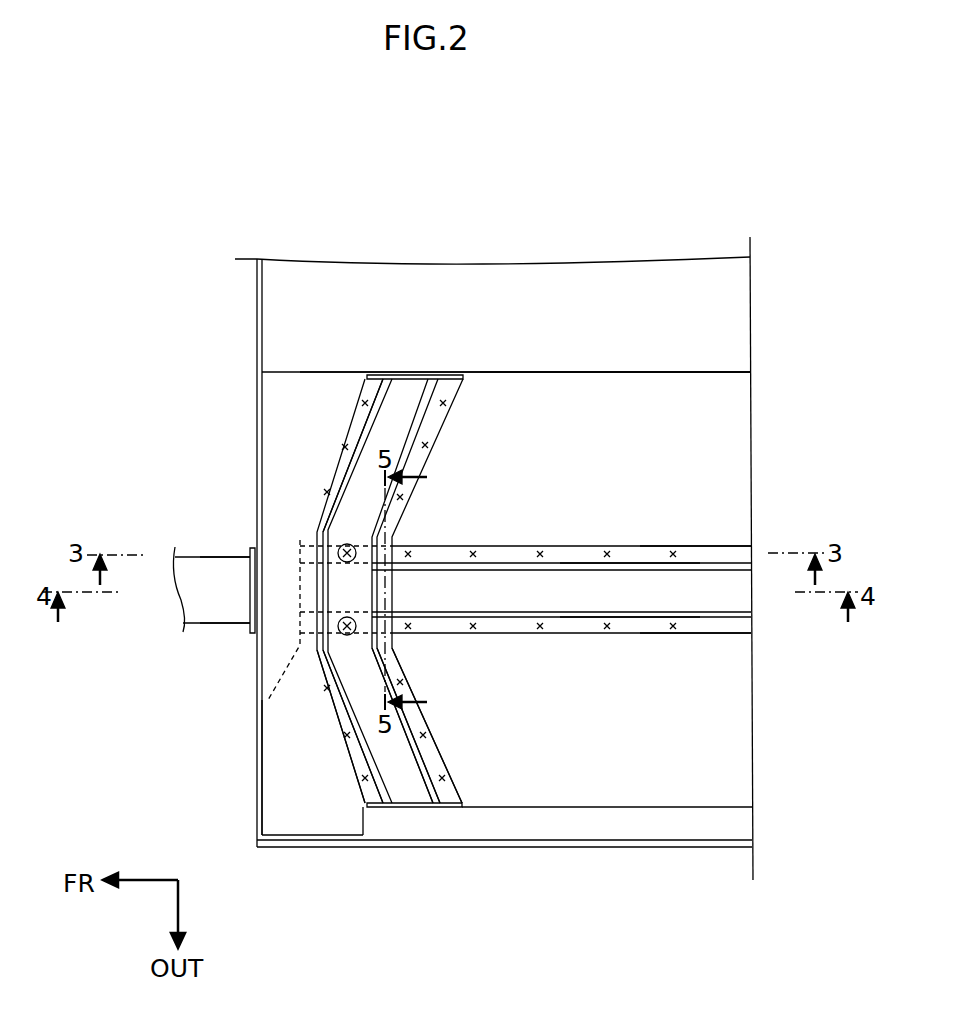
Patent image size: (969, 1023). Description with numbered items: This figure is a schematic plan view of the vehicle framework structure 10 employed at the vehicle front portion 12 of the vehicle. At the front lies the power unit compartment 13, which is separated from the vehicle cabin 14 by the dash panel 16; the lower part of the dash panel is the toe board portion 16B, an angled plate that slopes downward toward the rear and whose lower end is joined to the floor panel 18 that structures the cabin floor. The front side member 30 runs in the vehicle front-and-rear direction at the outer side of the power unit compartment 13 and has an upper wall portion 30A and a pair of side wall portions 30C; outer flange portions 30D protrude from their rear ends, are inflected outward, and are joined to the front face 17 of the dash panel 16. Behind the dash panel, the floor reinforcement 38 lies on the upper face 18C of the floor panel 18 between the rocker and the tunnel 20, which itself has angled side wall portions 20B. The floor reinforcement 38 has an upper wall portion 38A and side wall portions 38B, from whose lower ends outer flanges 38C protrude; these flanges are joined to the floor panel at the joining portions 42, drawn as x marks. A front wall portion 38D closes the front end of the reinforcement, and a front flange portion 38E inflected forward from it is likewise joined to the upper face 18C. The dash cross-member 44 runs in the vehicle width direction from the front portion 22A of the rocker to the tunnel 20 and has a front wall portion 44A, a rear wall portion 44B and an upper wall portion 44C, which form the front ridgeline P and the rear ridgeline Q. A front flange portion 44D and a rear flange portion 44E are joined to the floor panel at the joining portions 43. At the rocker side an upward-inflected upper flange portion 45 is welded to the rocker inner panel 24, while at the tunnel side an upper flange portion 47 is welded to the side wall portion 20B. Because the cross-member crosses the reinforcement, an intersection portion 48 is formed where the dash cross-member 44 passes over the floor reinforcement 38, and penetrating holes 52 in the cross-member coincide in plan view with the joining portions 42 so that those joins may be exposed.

The vehicle framework structure 10 is at (293, 427).
The vehicle front portion 12 is at (153, 292).
The power unit compartment 13 is at (198, 432).
The vehicle cabin 14 is at (568, 443).
The dash panel 16 is at (257, 473).
The toe board portion 16B is at (268, 757).
The front face 17 is at (257, 738).
The floor panel 18 is at (730, 418).
The upper face 18C is at (727, 748).
The tunnel 20 is at (614, 278).
The side wall portion 20B is at (618, 374).
The front portion 22A is at (393, 826).
The rocker inner panel 24 is at (756, 826).
The front side member 30 is at (195, 628).
The upper wall portion 30A is at (205, 598).
The side wall portion 30C is at (218, 555).
The outer flange portion 30D is at (250, 565).
The floor reinforcement 38 is at (571, 546).
The upper wall portion 38A is at (519, 577).
The side wall portion 38B is at (637, 568).
The outer flange 38C is at (712, 553).
The front wall portion 38D is at (327, 583).
The front flange portion 38E is at (262, 692).
The joining portion 42 is at (318, 548).
The joining portion 43 is at (343, 448).
The dash cross-member 44 is at (441, 732).
The front wall portion 44A is at (360, 758).
The rear wall portion 44B is at (432, 773).
The upper wall portion 44C is at (440, 745).
The front flange portion 44D is at (368, 793).
The rear flange portion 44E is at (450, 765).
The upper flange portion 45 is at (423, 808).
The upper flange portion 47 is at (410, 375).
The intersection portion 48 is at (398, 541).
The penetrating hole 52 is at (352, 546).
The ridgeline P is at (345, 729).
The ridgeline Q is at (420, 725).